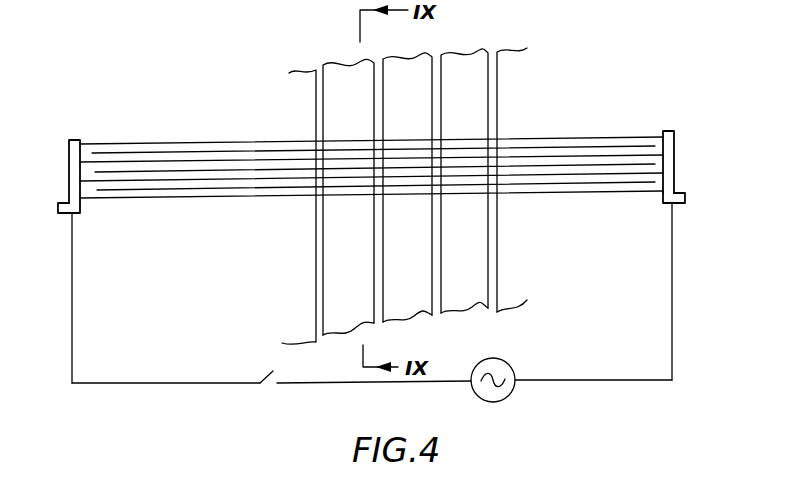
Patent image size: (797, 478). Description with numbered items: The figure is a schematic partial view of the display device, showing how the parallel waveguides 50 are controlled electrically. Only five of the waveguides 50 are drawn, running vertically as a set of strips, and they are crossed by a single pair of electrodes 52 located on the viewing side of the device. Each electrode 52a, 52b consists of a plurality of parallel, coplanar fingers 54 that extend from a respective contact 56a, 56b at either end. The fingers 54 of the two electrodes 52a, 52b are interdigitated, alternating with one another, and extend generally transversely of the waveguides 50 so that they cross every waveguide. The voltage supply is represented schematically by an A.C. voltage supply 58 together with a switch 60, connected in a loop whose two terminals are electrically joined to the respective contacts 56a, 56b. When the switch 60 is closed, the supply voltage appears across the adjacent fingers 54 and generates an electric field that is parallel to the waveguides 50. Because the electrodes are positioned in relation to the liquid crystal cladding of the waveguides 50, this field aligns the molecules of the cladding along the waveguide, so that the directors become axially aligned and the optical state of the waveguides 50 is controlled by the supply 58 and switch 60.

The parallel waveguides 50 is at (410, 58).
The pair of electrodes 52 is at (230, 136).
The fingers 54 is at (180, 142).
The electrode 52a is at (60, 177).
The electrode 52b is at (692, 178).
The contact 56a is at (72, 188).
The contact 56b is at (668, 148).
The A.C. voltage supply 58 is at (520, 368).
The switch 60 is at (268, 388).